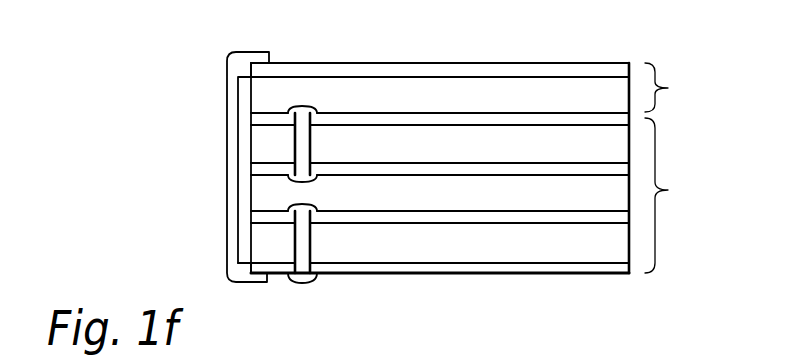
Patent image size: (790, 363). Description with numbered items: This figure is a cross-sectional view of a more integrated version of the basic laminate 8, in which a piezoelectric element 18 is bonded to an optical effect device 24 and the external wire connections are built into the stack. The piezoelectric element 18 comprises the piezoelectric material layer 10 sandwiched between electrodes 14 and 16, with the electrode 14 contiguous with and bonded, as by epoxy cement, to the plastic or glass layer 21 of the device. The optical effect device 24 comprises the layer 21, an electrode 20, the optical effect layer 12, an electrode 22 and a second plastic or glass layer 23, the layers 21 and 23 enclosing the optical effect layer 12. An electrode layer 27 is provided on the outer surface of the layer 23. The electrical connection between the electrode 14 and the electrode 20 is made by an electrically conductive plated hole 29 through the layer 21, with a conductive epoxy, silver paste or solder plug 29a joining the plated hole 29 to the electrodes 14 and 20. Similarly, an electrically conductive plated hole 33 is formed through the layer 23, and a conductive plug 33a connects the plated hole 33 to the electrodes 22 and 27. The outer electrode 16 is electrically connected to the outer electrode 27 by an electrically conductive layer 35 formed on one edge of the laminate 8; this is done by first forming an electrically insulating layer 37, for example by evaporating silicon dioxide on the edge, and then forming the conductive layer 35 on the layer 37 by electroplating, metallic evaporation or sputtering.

The laminate 8 is at (156, 156).
The piezoelectric material layer 10 is at (468, 100).
The optical effect layer 12 is at (540, 190).
The electrode 14 is at (533, 120).
The electrode 16 is at (392, 71).
The piezoelectric element 18 is at (670, 87).
The electrode 20 is at (600, 172).
The plastic or glass layer 21 is at (615, 170).
The electrode 22 is at (478, 213).
The plastic or glass layer 23 is at (420, 248).
The optical effect device 24 is at (673, 195).
The electrode layer 27 is at (340, 268).
The electrically conductive plated hole 29 is at (311, 148).
The conductive plug 29a is at (307, 163).
The electrically conductive plated hole 33 is at (310, 250).
The conductive plug 33a is at (312, 235).
The electrically conductive layer 35 is at (230, 222).
The electrically insulating layer 37 is at (243, 243).